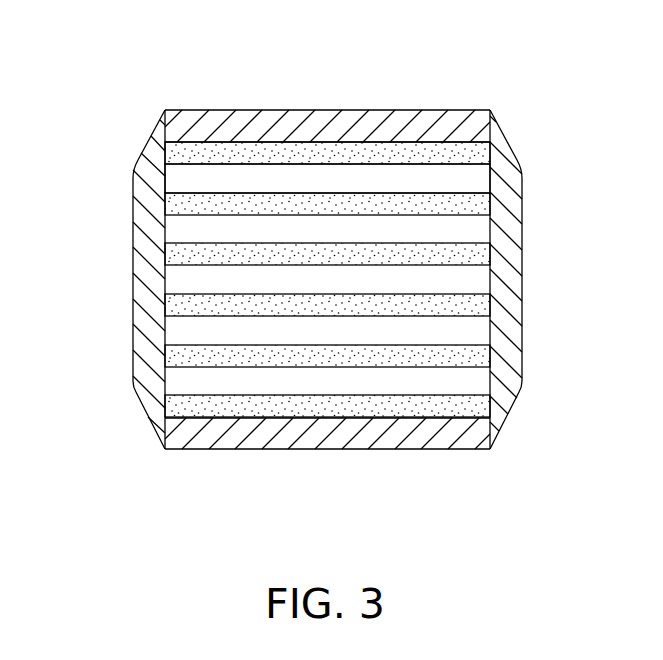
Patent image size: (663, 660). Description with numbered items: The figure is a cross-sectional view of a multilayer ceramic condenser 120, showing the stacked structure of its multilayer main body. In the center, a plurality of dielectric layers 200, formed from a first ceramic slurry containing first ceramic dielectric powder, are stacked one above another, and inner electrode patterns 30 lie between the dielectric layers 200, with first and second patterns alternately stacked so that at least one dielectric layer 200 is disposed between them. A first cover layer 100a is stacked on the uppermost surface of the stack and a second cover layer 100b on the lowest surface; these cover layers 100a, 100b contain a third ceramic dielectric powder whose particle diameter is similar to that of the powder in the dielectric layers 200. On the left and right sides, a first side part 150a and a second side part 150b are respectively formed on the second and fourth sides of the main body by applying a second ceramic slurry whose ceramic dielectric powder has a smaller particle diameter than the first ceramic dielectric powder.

The secondary battery cell 120 is at (327, 264).
The first cover layer 100a is at (325, 128).
The second cover layer 100b is at (323, 430).
The first side part 150a is at (148, 273).
The second side part 150b is at (505, 275).
The dielectric layer 200 is at (472, 185).
The inner electrode pattern 30 is at (482, 205).